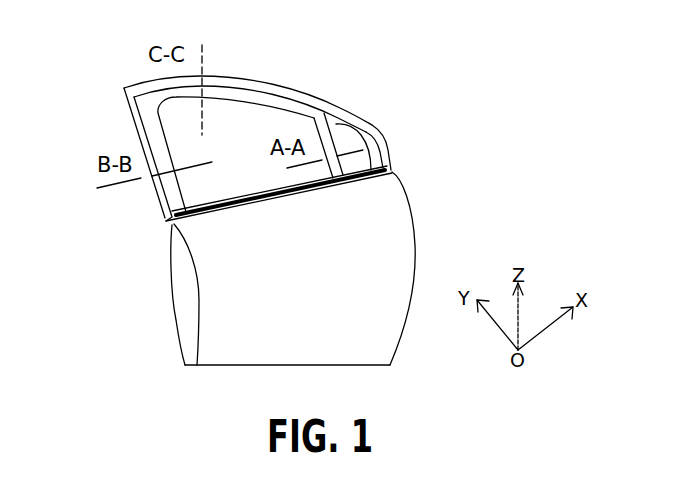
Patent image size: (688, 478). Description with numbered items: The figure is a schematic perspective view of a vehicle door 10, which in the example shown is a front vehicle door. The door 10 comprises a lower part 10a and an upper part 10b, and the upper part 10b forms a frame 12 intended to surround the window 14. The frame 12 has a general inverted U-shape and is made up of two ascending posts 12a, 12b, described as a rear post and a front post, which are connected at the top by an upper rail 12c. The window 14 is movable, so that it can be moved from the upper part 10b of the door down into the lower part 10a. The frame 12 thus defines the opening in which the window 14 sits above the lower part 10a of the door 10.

The door 10 is at (433, 171).
The lower part 10a is at (392, 250).
The upper part 10b is at (314, 102).
The frame 12 is at (232, 117).
The ascending post 12a is at (125, 113).
The ascending post 12b is at (344, 124).
The upper rail 12c is at (247, 86).
The window 14 is at (265, 115).